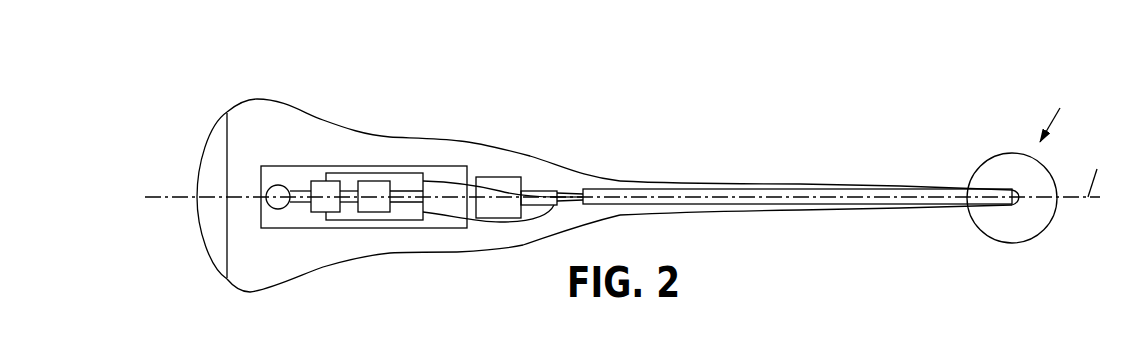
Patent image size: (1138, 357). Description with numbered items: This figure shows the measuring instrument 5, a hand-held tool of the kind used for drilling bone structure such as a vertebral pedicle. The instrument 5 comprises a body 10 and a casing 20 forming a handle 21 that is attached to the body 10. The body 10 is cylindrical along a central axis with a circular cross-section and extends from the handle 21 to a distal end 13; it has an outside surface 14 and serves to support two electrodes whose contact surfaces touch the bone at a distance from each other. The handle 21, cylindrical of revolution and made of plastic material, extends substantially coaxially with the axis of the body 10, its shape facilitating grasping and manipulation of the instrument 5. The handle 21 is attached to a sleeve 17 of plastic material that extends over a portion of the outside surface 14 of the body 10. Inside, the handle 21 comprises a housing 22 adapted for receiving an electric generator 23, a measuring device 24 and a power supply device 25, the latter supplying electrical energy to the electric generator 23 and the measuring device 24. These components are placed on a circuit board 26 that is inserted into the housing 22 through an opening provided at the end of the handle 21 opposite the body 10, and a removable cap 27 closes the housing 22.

The measuring instrument 5 is at (625, 173).
The body 10 is at (823, 198).
The distal end 13 is at (1015, 203).
The outside surface 14 is at (723, 188).
The sleeve 17 is at (675, 183).
The casing 20 is at (388, 170).
The handle 21 is at (355, 133).
The housing 22 is at (268, 134).
The electric generator 23 is at (316, 212).
The measuring device 24 is at (372, 181).
The power supply device 25 is at (277, 209).
The circuit board 26 is at (363, 213).
The removable cap 27 is at (203, 252).